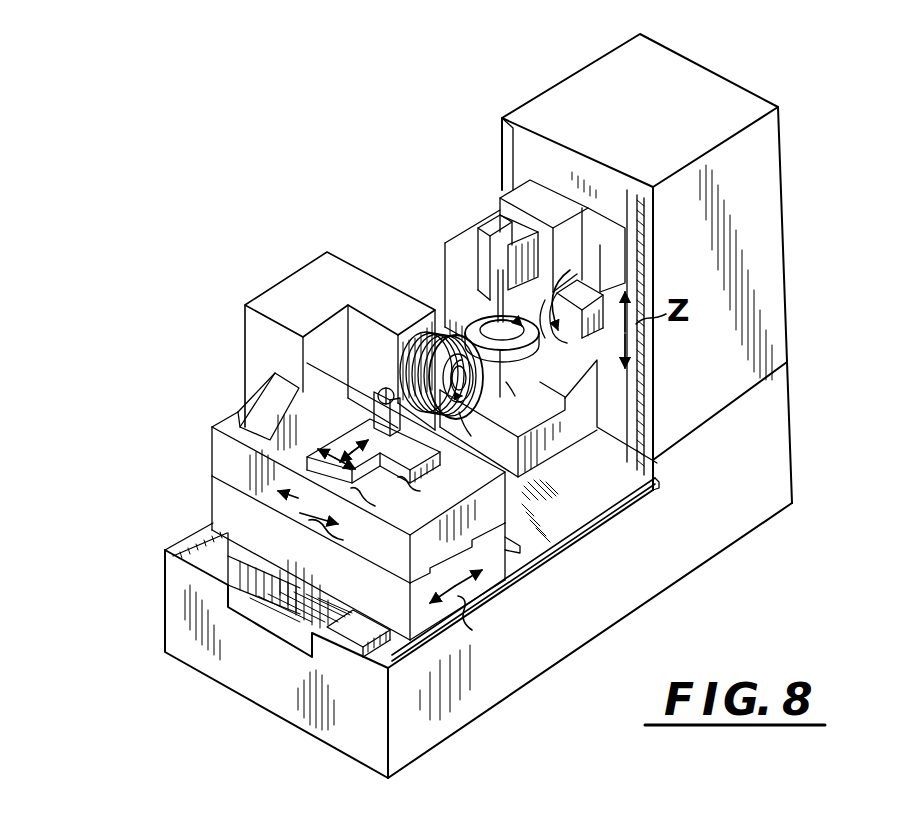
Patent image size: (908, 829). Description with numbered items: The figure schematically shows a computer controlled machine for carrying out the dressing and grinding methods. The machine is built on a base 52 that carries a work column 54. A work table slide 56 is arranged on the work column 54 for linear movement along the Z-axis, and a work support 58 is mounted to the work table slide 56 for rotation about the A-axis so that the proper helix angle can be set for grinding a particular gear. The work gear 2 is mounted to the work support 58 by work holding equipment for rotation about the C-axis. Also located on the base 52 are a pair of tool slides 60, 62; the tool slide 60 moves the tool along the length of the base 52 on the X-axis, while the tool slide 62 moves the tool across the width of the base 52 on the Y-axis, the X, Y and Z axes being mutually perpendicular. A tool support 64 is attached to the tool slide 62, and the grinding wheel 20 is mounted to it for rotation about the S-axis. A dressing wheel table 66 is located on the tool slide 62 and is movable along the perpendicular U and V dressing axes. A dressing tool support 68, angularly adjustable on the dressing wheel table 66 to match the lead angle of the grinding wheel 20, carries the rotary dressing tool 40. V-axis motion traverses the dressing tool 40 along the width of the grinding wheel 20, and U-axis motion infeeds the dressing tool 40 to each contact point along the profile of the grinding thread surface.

The work gear 2 is at (450, 292).
The grinding wheel 20 is at (396, 312).
The rotary dressing tool 40 is at (377, 390).
The base 52 is at (624, 591).
The work column 54 is at (775, 228).
The work table slide 56 is at (649, 376).
The work support 58 is at (526, 194).
The tool slide 60 is at (232, 514).
The tool slide 62 is at (230, 466).
The tool support 64 is at (280, 289).
The dressing wheel table 66 is at (357, 434).
The dressing tool support 68 is at (307, 368).